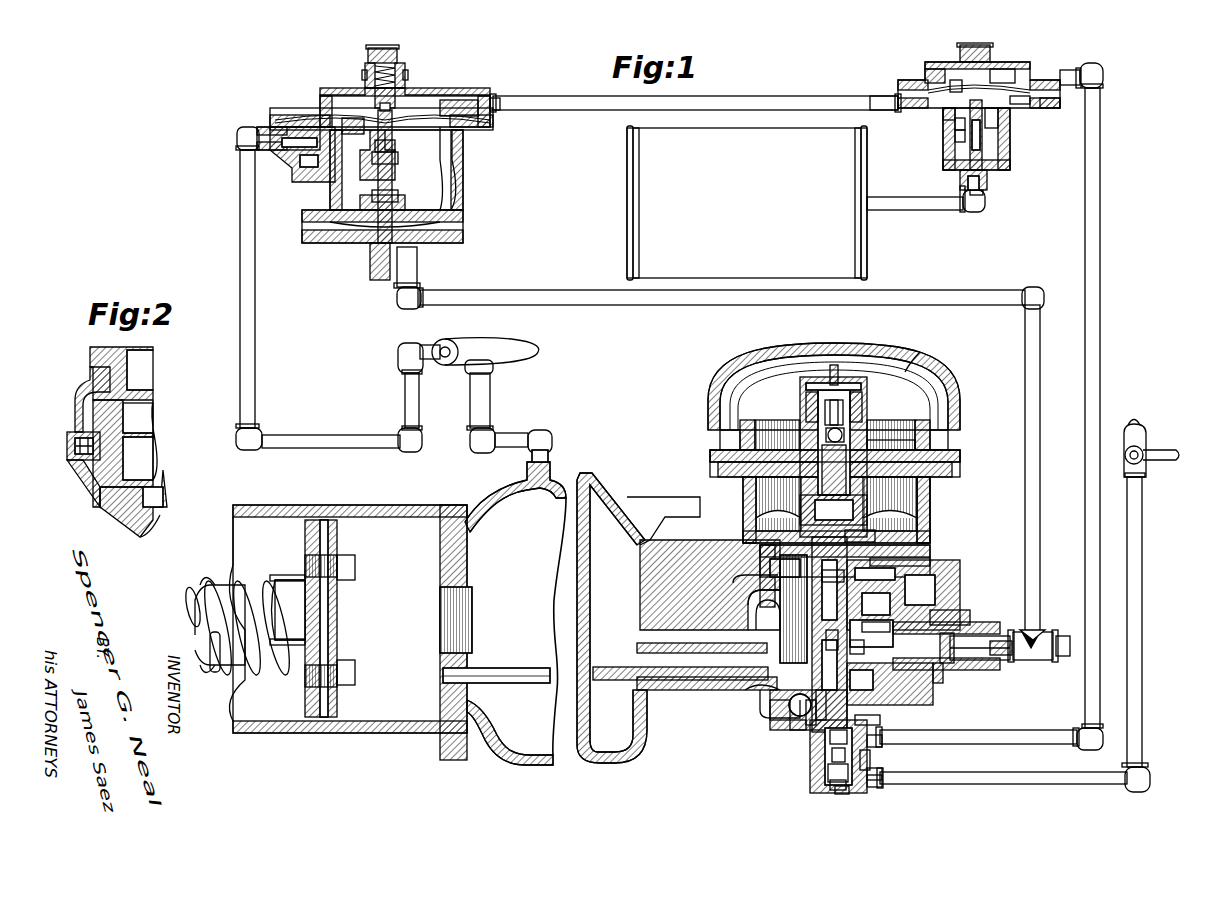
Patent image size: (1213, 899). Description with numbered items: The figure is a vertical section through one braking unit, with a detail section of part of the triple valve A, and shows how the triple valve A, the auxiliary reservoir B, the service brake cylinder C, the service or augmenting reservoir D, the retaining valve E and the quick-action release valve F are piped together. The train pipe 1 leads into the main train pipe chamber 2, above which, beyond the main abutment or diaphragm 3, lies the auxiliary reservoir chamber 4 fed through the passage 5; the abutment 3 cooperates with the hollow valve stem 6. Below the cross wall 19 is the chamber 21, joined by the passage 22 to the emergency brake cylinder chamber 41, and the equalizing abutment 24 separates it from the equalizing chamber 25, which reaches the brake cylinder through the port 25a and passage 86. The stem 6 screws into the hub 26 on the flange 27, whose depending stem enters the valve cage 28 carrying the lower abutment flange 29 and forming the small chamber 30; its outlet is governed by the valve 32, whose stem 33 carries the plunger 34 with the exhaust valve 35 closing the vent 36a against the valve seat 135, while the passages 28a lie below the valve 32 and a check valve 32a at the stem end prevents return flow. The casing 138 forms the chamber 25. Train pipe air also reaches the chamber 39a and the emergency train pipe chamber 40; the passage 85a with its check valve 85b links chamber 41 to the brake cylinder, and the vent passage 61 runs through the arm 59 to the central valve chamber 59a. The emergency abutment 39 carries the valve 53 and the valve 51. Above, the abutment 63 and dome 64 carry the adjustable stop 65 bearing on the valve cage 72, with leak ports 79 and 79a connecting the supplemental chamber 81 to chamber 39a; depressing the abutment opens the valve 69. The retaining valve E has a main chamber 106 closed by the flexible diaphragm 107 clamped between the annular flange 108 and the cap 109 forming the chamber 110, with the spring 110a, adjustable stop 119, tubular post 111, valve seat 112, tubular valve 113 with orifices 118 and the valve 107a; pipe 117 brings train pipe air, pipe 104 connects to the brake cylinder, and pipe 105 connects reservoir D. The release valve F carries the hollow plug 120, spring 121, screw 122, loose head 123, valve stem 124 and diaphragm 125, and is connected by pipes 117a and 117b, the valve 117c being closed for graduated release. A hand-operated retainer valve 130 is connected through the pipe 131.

In FIG. 1, the train pipe 1 is at (962, 652).
In FIG. 1, the main train pipe chamber 2 is at (876, 631).
In FIG. 2, the main train pipe chamber 2 is at (150, 460).
In FIG. 1, the main abutment or diaphragm 3 is at (920, 602).
In FIG. 1, the auxiliary reservoir chamber 4 is at (832, 608).
In FIG. 2, the auxiliary reservoir chamber 4 is at (145, 420).
In FIG. 1, the passage 5 is at (745, 590).
In FIG. 1, the hollow valve stem 6 is at (843, 642).
In FIG. 1, the cross wall 19 is at (867, 649).
In FIG. 1, the chamber 21 is at (905, 684).
In FIG. 1, the passage 22 is at (940, 612).
In FIG. 1, the equalizing abutment 24 is at (802, 720).
In FIG. 1, the equalizing chamber 25 is at (817, 710).
In FIG. 2, the equalizing chamber 25 is at (142, 528).
In FIG. 1, the port 25a is at (778, 720).
In FIG. 1, the hub 26 is at (776, 700).
In FIG. 1, the flange 27 is at (742, 690).
In FIG. 1, the valve cage 28 is at (874, 726).
In FIG. 1, the passages 28a is at (870, 722).
In FIG. 1, the lower abutment flange 29 is at (782, 730).
In FIG. 1, the small chamber 30 is at (816, 715).
In FIG. 1, the valve 32 is at (835, 762).
In FIG. 1, the check valve 32a is at (828, 742).
In FIG. 1, the stem 33 is at (850, 750).
In FIG. 1, the plunger 34 is at (862, 772).
In FIG. 1, the exhaust valve 35 is at (832, 790).
In FIG. 1, the vent 36a is at (840, 794).
In FIG. 1, the emergency abutment 39 is at (776, 542).
In FIG. 1, the chamber 39a is at (926, 480).
In FIG. 1, the emergency train pipe chamber 40 is at (872, 509).
In FIG. 1, the emergency brake cylinder chamber 41 is at (770, 556).
In FIG. 2, the emergency brake cylinder chamber 41 is at (140, 375).
In FIG. 1, the valve 51 is at (843, 578).
In FIG. 1, the valve 53 is at (780, 567).
In FIG. 1, the arm 59 is at (860, 538).
In FIG. 1, the central valve chamber 59a is at (890, 562).
In FIG. 1, the passage 61 is at (897, 550).
In FIG. 1, the abutment 63 is at (902, 460).
In FIG. 1, the dome 64 is at (862, 420).
In FIG. 1, the adjustable stop 65 is at (838, 390).
In FIG. 1, the valve 69 is at (840, 424).
In FIG. 1, the valve cage 72 is at (812, 397).
In FIG. 1, the leak port 79 is at (872, 455).
In FIG. 1, the leak port 79a is at (833, 383).
In FIG. 1, the supplemental chamber 81 is at (925, 397).
In FIG. 1, the passage 85a is at (760, 578).
In FIG. 2, the passage 85a is at (86, 400).
In FIG. 1, the check valve 85b is at (755, 612).
In FIG. 2, the check valve 85b is at (70, 450).
In FIG. 1, the passage 86 is at (672, 686).
In FIG. 1, the pipe 104 is at (1096, 322).
In FIG. 1, the pipe 105 is at (934, 208).
In FIG. 1, the main chamber 106 is at (956, 140).
In FIG. 1, the flexible diaphragm 107 is at (924, 82).
In FIG. 1, the valve 107a is at (1000, 122).
In FIG. 1, the annular flange 108 is at (1052, 100).
In FIG. 1, the cap 109 is at (1030, 68).
In FIG. 1, the chamber 110 is at (999, 74).
In FIG. 1, the spring 110a is at (955, 82).
In FIG. 1, the tubular post 111 is at (990, 156).
In FIG. 1, the valve seat 112 is at (950, 112).
In FIG. 1, the tubular valve 113 is at (955, 124).
In FIG. 1, the pipe 117 is at (800, 104).
In FIG. 1, the pipe 117a is at (641, 300).
In FIG. 1, the pipe 117b is at (248, 330).
In FIG. 1, the valve 117c is at (514, 362).
In FIG. 1, the orifices 118 is at (1020, 102).
In FIG. 1, the adjustable stop 119 is at (970, 56).
In FIG. 1, the hollow plug 120 is at (399, 80).
In FIG. 1, the spring 121 is at (372, 80).
In FIG. 1, the screw 122 is at (396, 58).
In FIG. 1, the loose head 123 is at (398, 103).
In FIG. 1, the valve stem 124 is at (390, 146).
In FIG. 1, the diaphragm 125 is at (352, 126).
In FIG. 1, the hand-operated retainer valve 130 is at (1140, 440).
In FIG. 1, the pipe 131 is at (1137, 615).
In FIG. 1, the valve seat 135 is at (868, 760).
In FIG. 1, the casing 138 is at (830, 782).
In FIG. 1, the triple valve A is at (834, 440).
In FIG. 1, the auxiliary reservoir B is at (620, 750).
In FIG. 1, the service brake cylinder C is at (390, 700).
In FIG. 1, the service reservoir D is at (747, 203).
In FIG. 1, the retaining valve E is at (965, 126).
In FIG. 1, the quick-action release valve F is at (378, 188).